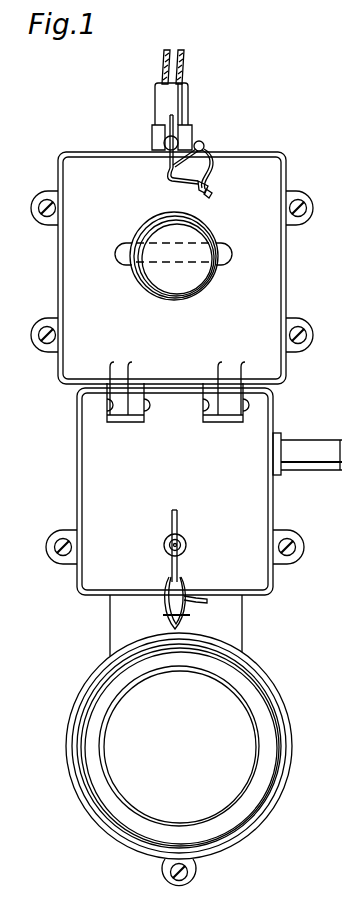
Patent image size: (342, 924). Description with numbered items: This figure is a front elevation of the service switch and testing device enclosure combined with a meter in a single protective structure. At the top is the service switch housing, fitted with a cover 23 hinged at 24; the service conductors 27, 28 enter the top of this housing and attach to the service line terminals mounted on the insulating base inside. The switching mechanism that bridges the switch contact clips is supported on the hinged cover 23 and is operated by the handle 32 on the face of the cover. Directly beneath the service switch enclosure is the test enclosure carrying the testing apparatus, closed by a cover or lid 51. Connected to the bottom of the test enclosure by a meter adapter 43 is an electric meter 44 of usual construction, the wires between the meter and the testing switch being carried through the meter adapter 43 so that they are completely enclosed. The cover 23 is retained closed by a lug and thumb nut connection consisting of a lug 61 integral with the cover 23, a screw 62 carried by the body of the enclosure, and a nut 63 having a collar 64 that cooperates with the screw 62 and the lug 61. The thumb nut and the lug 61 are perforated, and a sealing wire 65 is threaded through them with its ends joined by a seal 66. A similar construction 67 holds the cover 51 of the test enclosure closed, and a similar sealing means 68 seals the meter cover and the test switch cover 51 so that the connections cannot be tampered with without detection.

The cover 23 is at (270, 182).
The hinge 24 is at (226, 420).
The service conductor 27 is at (162, 65).
The service conductor 28 is at (185, 66).
The handle 32 is at (188, 230).
The meter adapter 43 is at (230, 612).
The electric meter 44 is at (253, 797).
The cover 51 is at (253, 505).
The lug 61 is at (190, 131).
The screw 62 is at (165, 141).
The nut 63 is at (178, 118).
The collar 64 is at (205, 148).
The sealing wire 65 is at (210, 165).
The seal 66 is at (199, 188).
The similar construction 67 is at (186, 545).
The sealing means 68 is at (186, 582).